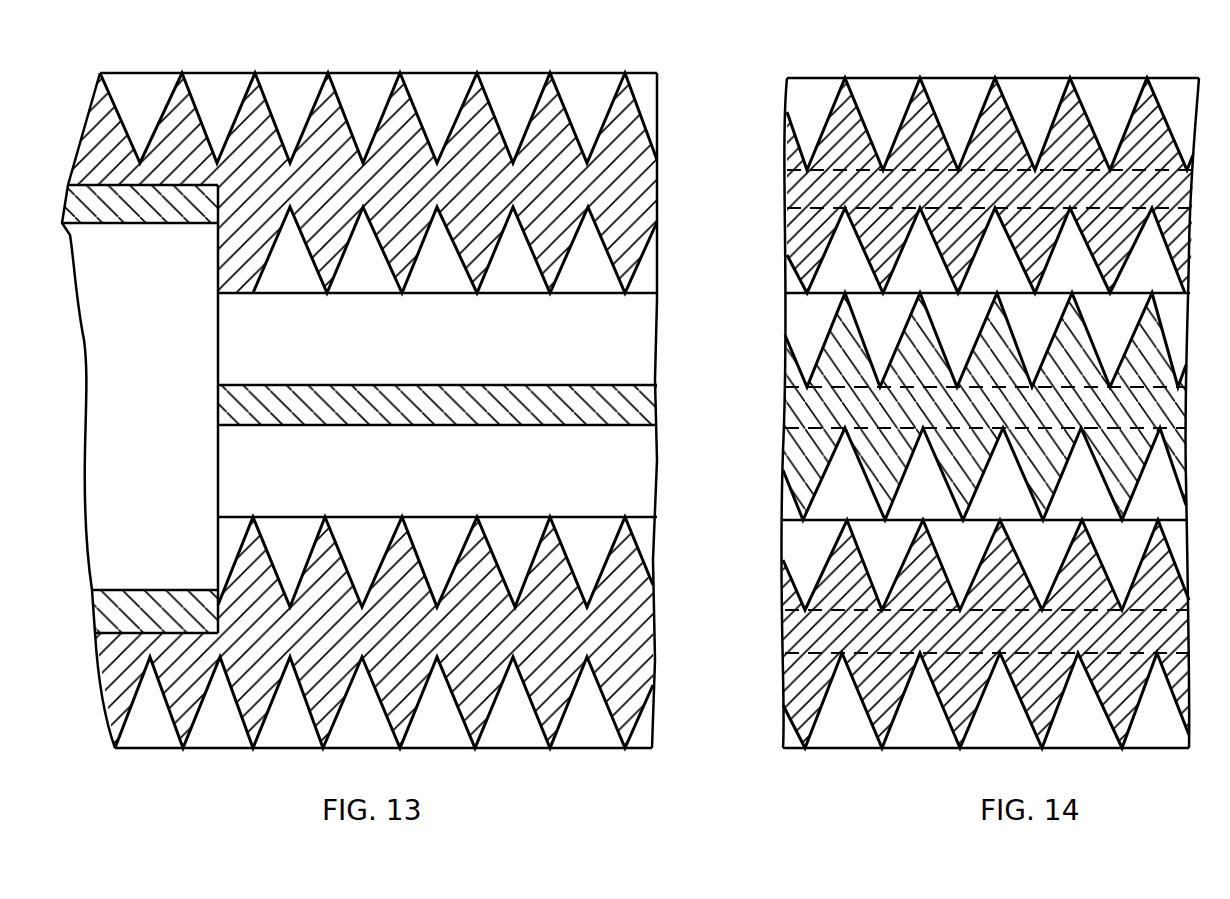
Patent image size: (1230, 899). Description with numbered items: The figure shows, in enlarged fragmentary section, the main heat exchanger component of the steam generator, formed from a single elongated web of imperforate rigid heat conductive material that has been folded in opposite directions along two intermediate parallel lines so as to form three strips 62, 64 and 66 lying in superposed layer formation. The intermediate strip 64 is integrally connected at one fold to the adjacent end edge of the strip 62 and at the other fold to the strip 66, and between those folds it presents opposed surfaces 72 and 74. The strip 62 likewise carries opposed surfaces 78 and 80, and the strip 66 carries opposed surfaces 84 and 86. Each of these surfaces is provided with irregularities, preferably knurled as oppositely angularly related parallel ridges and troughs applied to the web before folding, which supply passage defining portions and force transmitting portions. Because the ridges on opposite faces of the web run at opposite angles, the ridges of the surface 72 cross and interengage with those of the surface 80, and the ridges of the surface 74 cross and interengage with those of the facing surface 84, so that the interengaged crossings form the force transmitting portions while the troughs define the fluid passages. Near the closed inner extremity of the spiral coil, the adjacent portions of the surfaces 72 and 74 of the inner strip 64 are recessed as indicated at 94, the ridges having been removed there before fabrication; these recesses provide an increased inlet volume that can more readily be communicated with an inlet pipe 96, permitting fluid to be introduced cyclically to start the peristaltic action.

In FIG. 13, the strip 62 is at (633, 192).
In FIG. 14, the strip 62 is at (790, 185).
In FIG. 13, the intermediate strip 64 is at (578, 430).
In FIG. 14, the intermediate strip 64 is at (805, 408).
In FIG. 13, the strip 66 is at (625, 632).
In FIG. 14, the strip 66 is at (797, 640).
In FIG. 14, the surface 72 is at (826, 334).
In FIG. 14, the surface 74 is at (822, 490).
In FIG. 13, the surface 78 is at (533, 100).
In FIG. 14, the surface 78 is at (905, 100).
In FIG. 13, the surface 80 is at (606, 240).
In FIG. 14, the surface 80 is at (800, 270).
In FIG. 13, the surface 84 is at (606, 560).
In FIG. 14, the surface 84 is at (830, 560).
In FIG. 13, the surface 86 is at (597, 745).
In FIG. 14, the surface 86 is at (850, 740).
In FIG. 13, the recess 94 is at (660, 430).
In FIG. 13, the inlet pipe 96 is at (75, 188).